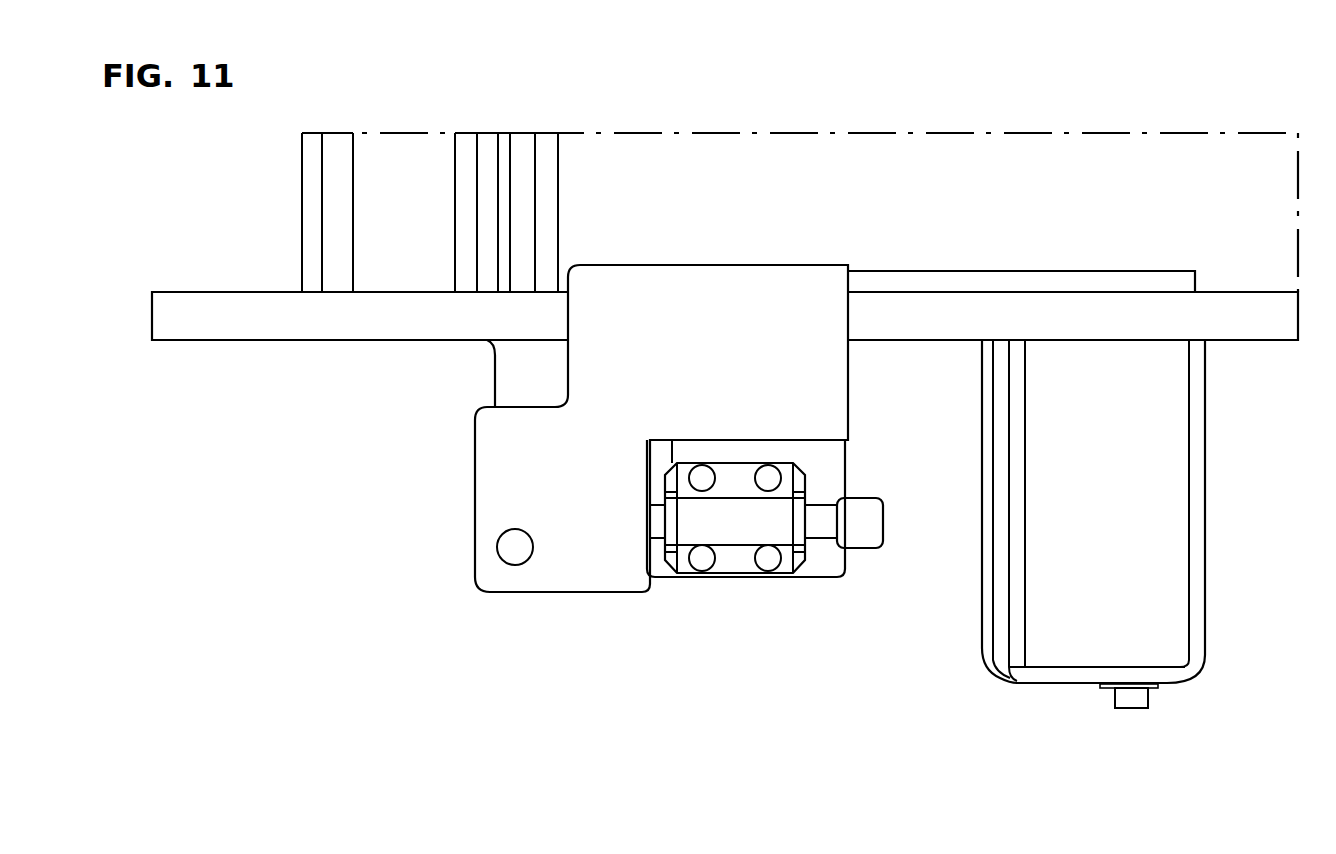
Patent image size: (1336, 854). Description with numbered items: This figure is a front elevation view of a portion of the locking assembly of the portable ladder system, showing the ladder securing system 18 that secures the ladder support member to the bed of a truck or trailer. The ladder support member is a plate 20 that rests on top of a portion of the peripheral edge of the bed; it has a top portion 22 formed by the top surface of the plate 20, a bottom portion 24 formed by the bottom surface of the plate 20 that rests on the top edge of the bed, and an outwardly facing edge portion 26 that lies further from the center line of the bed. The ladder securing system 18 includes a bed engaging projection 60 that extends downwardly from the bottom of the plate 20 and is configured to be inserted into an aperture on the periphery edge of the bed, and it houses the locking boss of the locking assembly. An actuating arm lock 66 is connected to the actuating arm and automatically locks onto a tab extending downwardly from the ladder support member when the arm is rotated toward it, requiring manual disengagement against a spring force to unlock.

The ladder securing system 18 is at (787, 590).
The plate 20 is at (302, 331).
The top portion 22 is at (190, 292).
The bottom portion 24 is at (175, 341).
The outwardly facing edge portion 26 is at (392, 324).
The bed engaging projection 60 is at (1127, 548).
The actuating arm lock 66 is at (856, 582).